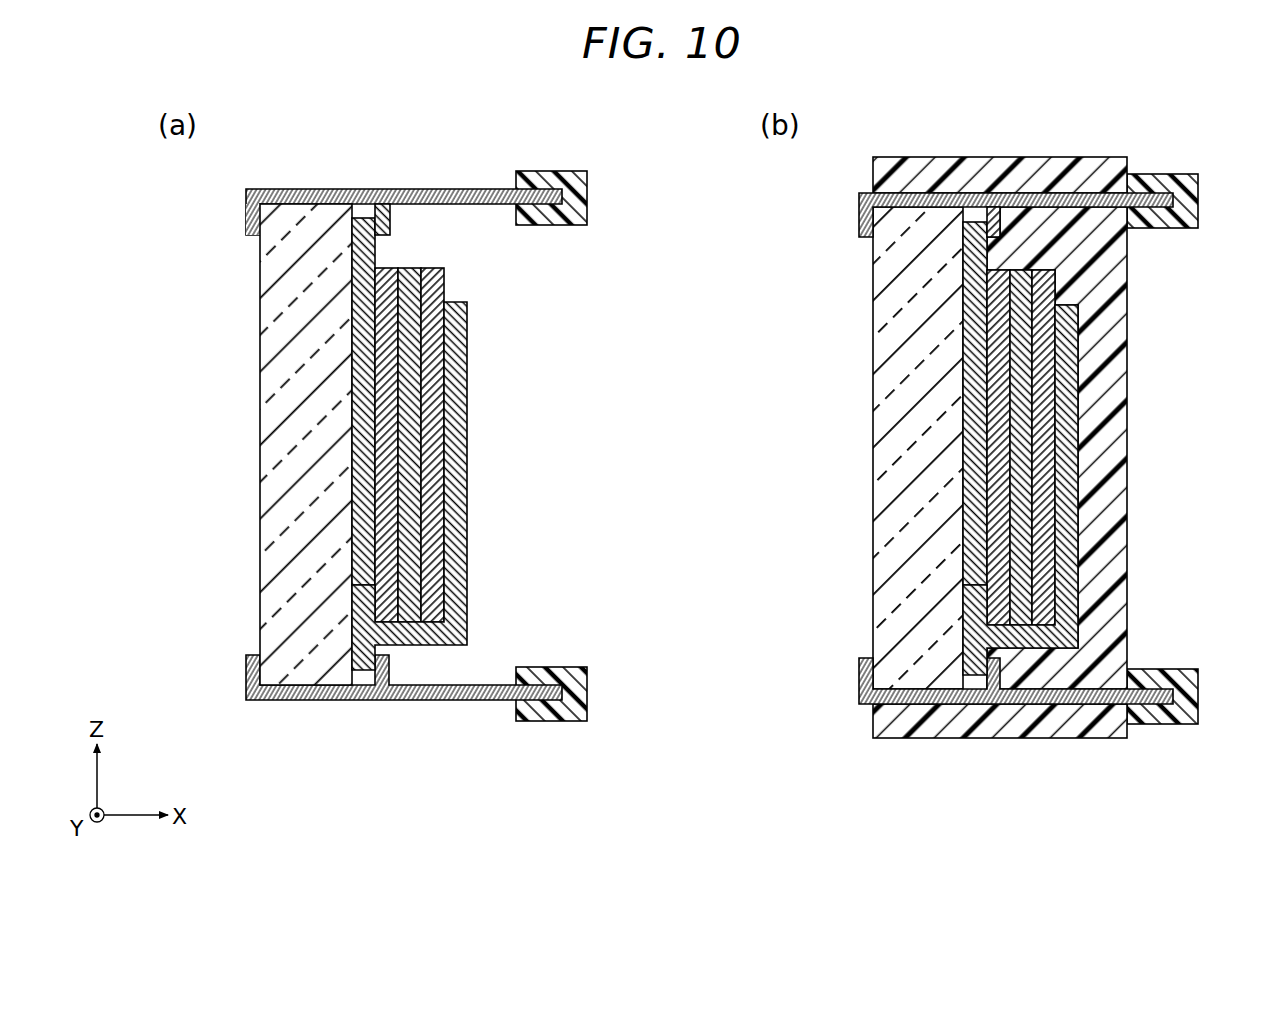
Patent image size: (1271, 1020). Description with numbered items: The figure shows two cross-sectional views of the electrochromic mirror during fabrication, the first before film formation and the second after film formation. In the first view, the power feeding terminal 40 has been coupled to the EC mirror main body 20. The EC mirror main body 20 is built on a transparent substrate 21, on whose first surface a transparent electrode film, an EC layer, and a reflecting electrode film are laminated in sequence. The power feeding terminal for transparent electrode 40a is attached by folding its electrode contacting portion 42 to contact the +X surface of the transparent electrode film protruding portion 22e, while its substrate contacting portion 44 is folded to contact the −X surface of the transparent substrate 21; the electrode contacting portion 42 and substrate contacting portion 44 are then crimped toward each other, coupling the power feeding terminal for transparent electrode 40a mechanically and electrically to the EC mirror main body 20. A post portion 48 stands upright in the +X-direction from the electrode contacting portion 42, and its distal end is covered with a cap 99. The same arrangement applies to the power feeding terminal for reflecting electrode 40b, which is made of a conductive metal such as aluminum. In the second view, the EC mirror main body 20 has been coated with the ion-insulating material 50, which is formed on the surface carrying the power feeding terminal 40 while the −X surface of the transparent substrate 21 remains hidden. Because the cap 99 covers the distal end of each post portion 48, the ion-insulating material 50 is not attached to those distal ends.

The EC mirror main body 20 is at (250, 410).
The transparent substrate 21 is at (275, 340).
The transparent electrode film protruding portion 22e is at (383, 208).
The power feeding terminal 40 is at (686, 443).
The power feeding terminal for transparent electrode 40a is at (445, 189).
The power feeding terminal for reflecting electrode 40b is at (463, 701).
The electrode contacting portion 42 is at (383, 236).
The substrate contacting portion 44 is at (246, 208).
The post portion 48 is at (485, 189).
The ion-insulating material 50 is at (1120, 446).
The cap 99 is at (588, 197).